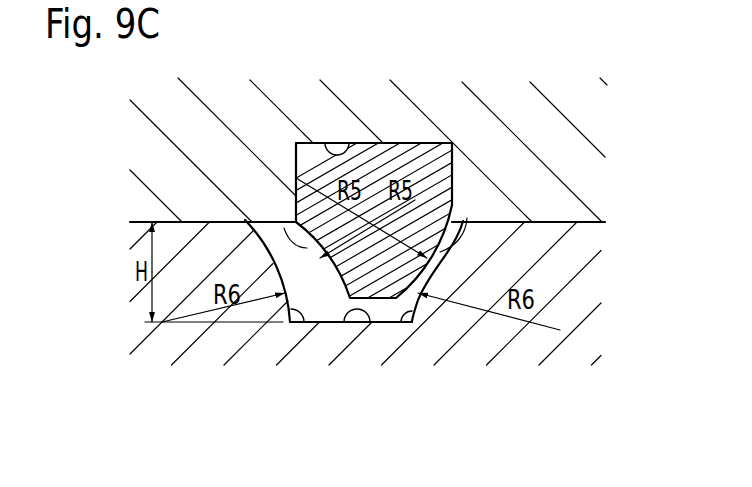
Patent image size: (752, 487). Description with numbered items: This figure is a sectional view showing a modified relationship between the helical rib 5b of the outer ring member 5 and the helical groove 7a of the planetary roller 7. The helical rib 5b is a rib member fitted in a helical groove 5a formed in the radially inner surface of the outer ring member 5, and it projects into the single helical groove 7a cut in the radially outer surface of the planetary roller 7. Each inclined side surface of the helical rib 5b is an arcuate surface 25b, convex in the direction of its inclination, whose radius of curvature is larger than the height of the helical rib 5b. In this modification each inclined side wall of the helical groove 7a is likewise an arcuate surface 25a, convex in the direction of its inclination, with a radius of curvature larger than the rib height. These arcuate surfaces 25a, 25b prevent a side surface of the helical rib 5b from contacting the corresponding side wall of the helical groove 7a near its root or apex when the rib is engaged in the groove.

The outer ring member 5 is at (583, 117).
The helical groove 5a is at (336, 154).
The helical rib 5b is at (372, 188).
The planetary roller 7 is at (585, 302).
The helical groove 7a is at (345, 323).
The arcuate surface 25a is at (304, 323).
The arcuate surface 25b is at (284, 228).